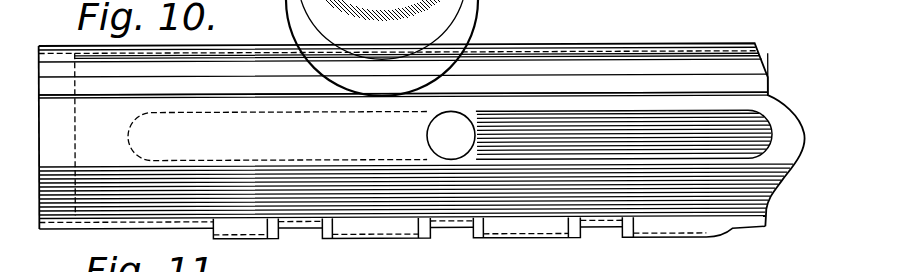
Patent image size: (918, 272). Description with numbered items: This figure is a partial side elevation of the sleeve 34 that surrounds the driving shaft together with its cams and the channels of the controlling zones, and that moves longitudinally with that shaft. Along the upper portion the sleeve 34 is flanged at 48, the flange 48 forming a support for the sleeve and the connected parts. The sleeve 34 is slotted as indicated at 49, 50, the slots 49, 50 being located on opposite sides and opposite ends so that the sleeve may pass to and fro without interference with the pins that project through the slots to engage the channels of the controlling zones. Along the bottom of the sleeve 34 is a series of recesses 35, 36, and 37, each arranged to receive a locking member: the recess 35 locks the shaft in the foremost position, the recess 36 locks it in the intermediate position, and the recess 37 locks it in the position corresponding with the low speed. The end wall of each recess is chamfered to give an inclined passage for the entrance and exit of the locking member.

The sleeve 34 is at (583, 65).
The flange 48 is at (458, 81).
The slot 49 is at (580, 154).
The slot 50 is at (292, 164).
The recess 37 is at (262, 242).
The recess 36 is at (393, 242).
The recess 35 is at (543, 241).